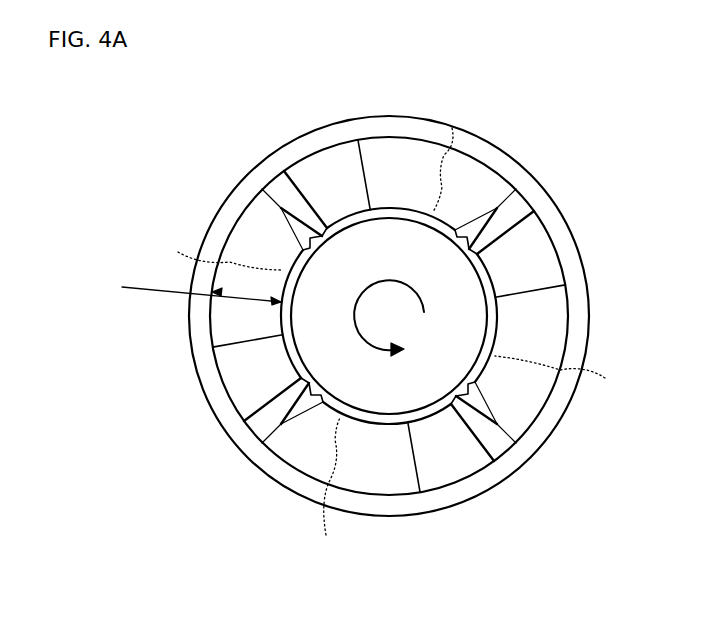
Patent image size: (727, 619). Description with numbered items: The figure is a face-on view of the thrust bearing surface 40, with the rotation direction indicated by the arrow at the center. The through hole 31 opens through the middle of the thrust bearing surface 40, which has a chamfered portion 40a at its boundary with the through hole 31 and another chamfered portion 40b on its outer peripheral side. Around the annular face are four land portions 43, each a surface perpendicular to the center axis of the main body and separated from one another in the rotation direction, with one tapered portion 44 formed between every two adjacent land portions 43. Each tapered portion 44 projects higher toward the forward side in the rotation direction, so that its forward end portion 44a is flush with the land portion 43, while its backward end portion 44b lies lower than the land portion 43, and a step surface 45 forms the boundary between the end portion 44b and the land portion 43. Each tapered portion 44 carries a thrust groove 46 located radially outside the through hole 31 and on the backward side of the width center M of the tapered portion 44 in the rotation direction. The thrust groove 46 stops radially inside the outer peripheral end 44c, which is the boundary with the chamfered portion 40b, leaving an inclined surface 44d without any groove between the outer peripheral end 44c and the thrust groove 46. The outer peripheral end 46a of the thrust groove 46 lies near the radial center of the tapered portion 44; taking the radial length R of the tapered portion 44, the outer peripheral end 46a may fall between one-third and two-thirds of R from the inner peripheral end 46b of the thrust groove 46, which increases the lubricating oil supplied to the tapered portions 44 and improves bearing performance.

The thrust bearing surface 40 is at (369, 306).
The chamfered portion 40a is at (283, 318).
The chamfered portion 40b is at (415, 125).
The through hole 31 is at (300, 288).
The land portion 43 is at (322, 135).
The tapered portion 44 is at (472, 167).
The end portion 44a is at (378, 147).
The end portion 44b is at (284, 172).
The outer peripheral end 44c is at (268, 188).
The inclined surface 44d is at (258, 172).
The step surface 45 is at (289, 180).
The thrust groove 46 is at (497, 208).
The outer peripheral end 46a is at (517, 193).
The inner peripheral end 46b is at (322, 232).
The width center M is at (390, 318).
The length R is at (190, 289).